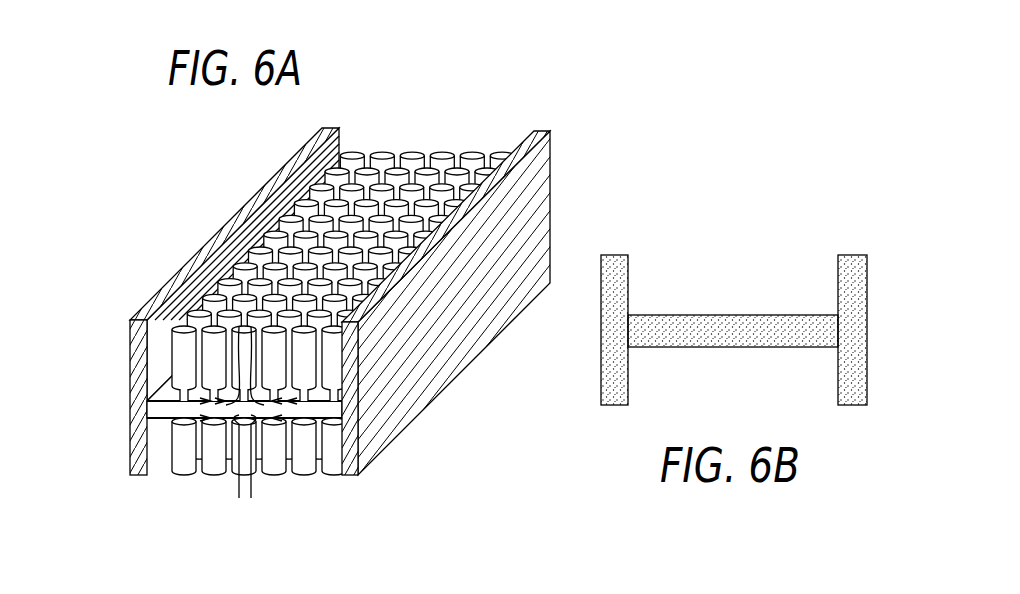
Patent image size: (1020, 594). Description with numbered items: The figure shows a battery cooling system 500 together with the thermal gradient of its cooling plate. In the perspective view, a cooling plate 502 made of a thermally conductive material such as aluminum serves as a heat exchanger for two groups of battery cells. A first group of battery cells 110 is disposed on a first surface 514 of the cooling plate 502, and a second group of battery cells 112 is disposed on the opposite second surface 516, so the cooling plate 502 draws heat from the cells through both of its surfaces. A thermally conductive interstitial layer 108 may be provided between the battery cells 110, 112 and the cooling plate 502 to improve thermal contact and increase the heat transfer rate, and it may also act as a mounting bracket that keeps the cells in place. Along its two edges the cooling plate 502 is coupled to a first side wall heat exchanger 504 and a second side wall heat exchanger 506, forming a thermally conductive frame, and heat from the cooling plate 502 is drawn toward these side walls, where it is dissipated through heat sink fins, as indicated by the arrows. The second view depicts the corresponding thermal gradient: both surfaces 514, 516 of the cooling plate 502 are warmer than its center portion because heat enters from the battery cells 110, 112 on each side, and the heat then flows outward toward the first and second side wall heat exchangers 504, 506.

In FIG. 6A, the battery cooling system 500 is at (166, 200).
In FIG. 6A, the cooling plate 502 is at (162, 407).
In FIG. 6B, the cooling plate 502 is at (742, 315).
In FIG. 6A, the first side wall heat exchanger 504 is at (151, 311).
In FIG. 6B, the first side wall heat exchanger 504 is at (602, 344).
In FIG. 6A, the second side wall heat exchanger 506 is at (528, 221).
In FIG. 6B, the second side wall heat exchanger 506 is at (853, 256).
In FIG. 6A, the first surface 514 is at (165, 388).
In FIG. 6A, the second surface 516 is at (160, 422).
In FIG. 6A, the thermally conductive interstitial layer 108 is at (327, 389).
In FIG. 6A, the first group of battery cells 110 is at (410, 146).
In FIG. 6A, the second group of battery cells 112 is at (275, 470).